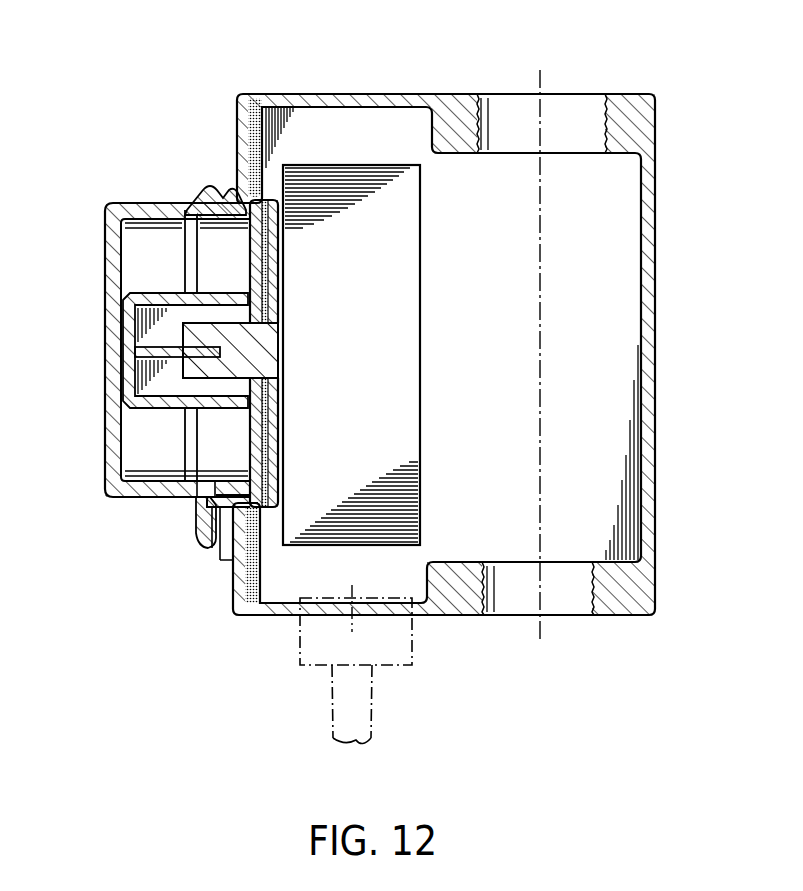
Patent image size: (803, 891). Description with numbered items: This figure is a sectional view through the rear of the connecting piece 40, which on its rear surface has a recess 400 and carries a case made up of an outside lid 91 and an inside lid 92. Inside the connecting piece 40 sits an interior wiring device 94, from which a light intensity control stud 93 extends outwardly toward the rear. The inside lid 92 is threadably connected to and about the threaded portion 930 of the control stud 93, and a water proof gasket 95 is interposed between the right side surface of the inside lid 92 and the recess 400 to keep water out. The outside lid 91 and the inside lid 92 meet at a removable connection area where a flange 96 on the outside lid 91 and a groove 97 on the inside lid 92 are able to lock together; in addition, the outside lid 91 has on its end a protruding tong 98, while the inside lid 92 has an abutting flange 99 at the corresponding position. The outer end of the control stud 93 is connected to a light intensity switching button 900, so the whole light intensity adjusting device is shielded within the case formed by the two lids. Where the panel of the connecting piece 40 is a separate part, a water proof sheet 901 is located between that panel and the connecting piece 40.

The connecting piece 40 is at (657, 407).
The outside lid 91 is at (137, 493).
The inside lid 92 is at (262, 520).
The light intensity control stud 93 is at (185, 290).
The threaded portion 930 is at (232, 305).
The interior wiring device 94 is at (403, 177).
The water proof gasket 95 is at (278, 200).
The flange 96 is at (203, 493).
The groove 97 is at (193, 548).
The protruding tong 98 is at (210, 550).
The abutting flange 99 is at (220, 550).
The light intensity switching button 900 is at (150, 295).
The water proof sheet 901 is at (250, 92).
The recess 400 is at (278, 258).